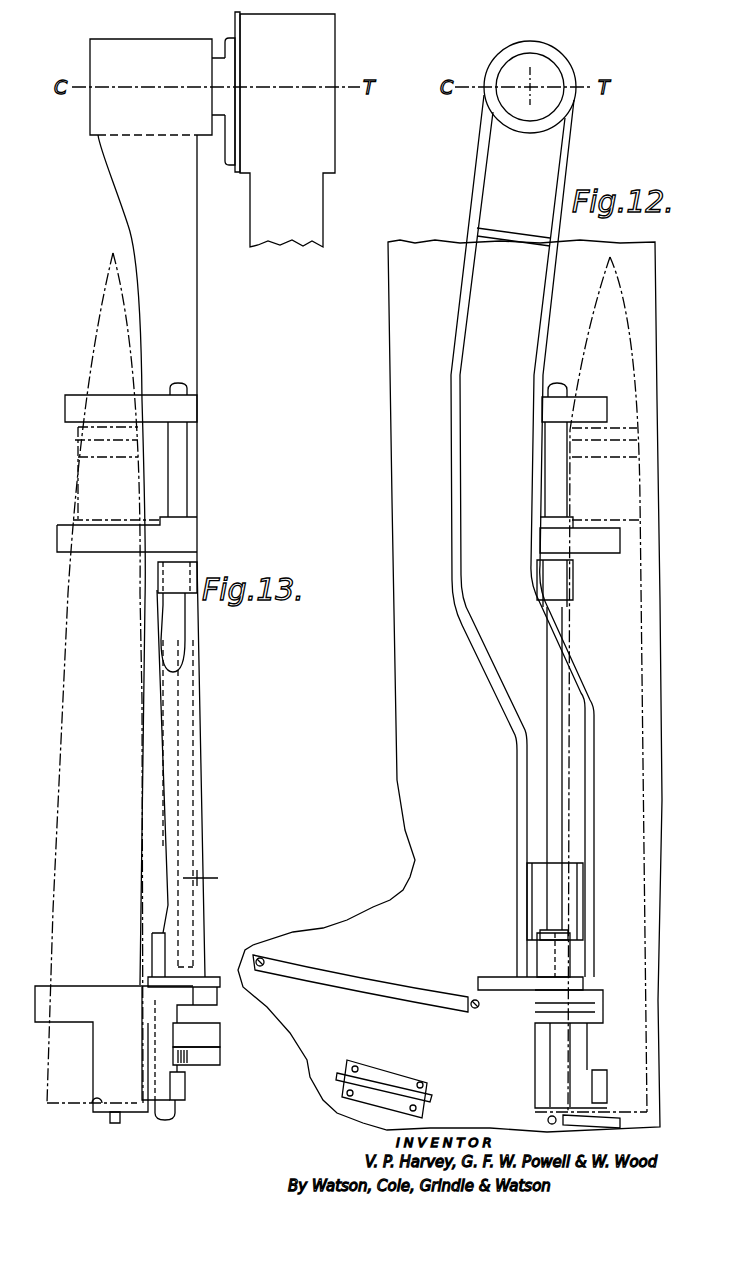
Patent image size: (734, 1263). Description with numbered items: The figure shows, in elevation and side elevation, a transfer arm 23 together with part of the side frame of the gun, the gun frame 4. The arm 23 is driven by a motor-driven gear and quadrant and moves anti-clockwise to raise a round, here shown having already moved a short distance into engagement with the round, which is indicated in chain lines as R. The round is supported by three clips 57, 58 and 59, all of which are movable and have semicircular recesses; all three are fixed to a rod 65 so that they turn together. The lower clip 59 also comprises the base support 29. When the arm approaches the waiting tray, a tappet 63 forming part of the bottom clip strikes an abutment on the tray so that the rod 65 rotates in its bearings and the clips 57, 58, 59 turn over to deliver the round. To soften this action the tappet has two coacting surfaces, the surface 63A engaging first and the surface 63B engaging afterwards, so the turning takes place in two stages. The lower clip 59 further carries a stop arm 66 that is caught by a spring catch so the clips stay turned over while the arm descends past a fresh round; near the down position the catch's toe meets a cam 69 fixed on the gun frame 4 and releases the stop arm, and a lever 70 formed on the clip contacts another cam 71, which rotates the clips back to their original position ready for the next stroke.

In FIG. 12, the gun frame 4 is at (395, 910).
In FIG. 13, the transfer arm 23 is at (208, 977).
In FIG. 12, the transfer arm 23 is at (500, 983).
In FIG. 13, the base support 29 is at (93, 1100).
In FIG. 12, the base support 29 is at (605, 1106).
In FIG. 13, the clip 57 is at (68, 406).
In FIG. 12, the clip 57 is at (602, 403).
In FIG. 13, the clip 58 is at (63, 537).
In FIG. 12, the clip 58 is at (610, 545).
In FIG. 13, the lower clip 59 is at (42, 990).
In FIG. 12, the lower clip 59 is at (552, 1041).
In FIG. 13, the tappet 63 is at (220, 1027).
In FIG. 13, the tappet surface 63A is at (220, 1066).
In FIG. 13, the tappet surface 63B is at (220, 1044).
In FIG. 13, the rod 65 is at (178, 466).
In FIG. 12, the rod 65 is at (557, 627).
In FIG. 13, the stop arm 66 is at (218, 997).
In FIG. 12, the cam 69 is at (393, 992).
In FIG. 13, the lever 70 is at (186, 1092).
In FIG. 12, the lever 70 is at (600, 1083).
In FIG. 12, the cam 71 is at (382, 1090).
In FIG. 13, the rocket R is at (78, 688).
In FIG. 12, the rocket R is at (647, 617).